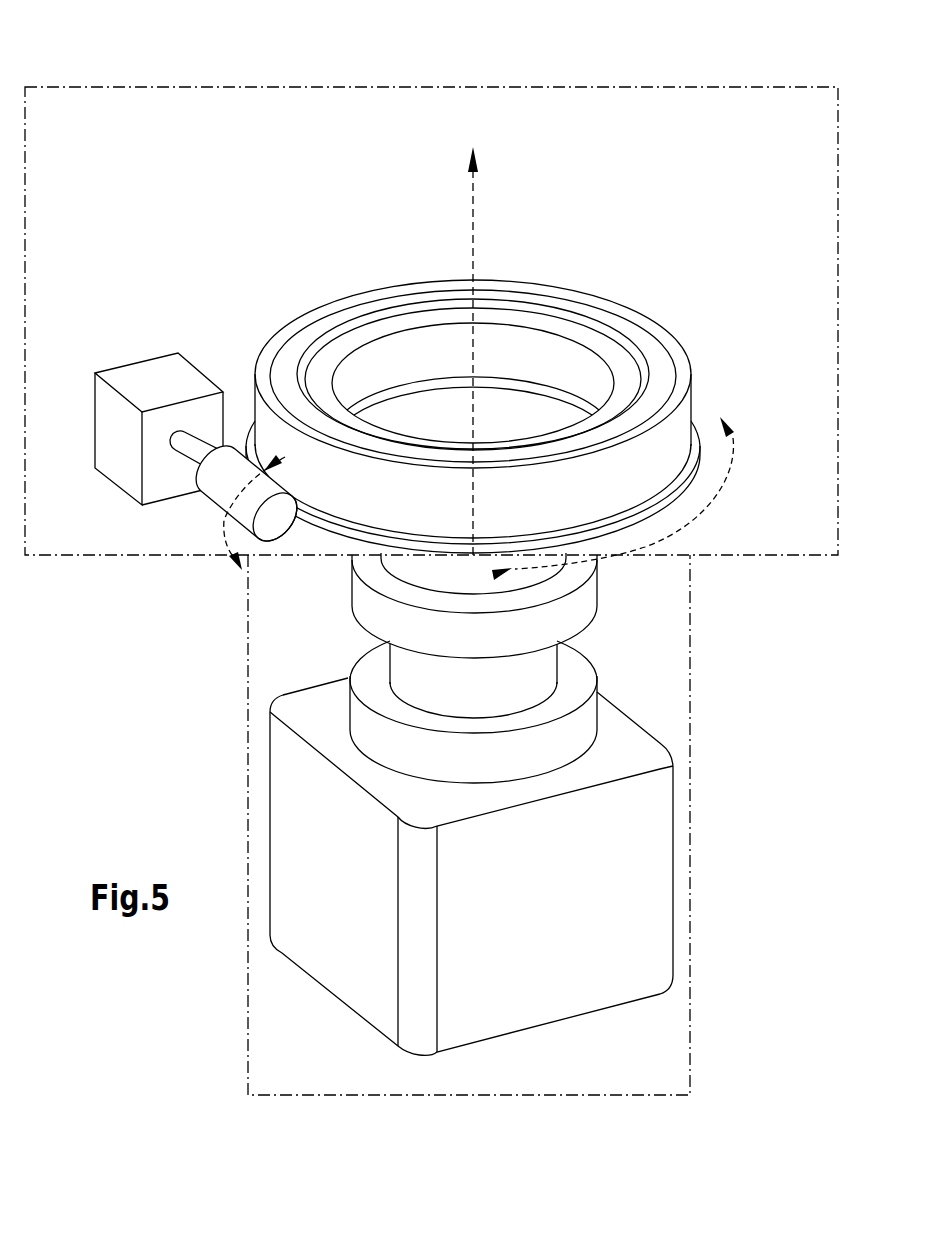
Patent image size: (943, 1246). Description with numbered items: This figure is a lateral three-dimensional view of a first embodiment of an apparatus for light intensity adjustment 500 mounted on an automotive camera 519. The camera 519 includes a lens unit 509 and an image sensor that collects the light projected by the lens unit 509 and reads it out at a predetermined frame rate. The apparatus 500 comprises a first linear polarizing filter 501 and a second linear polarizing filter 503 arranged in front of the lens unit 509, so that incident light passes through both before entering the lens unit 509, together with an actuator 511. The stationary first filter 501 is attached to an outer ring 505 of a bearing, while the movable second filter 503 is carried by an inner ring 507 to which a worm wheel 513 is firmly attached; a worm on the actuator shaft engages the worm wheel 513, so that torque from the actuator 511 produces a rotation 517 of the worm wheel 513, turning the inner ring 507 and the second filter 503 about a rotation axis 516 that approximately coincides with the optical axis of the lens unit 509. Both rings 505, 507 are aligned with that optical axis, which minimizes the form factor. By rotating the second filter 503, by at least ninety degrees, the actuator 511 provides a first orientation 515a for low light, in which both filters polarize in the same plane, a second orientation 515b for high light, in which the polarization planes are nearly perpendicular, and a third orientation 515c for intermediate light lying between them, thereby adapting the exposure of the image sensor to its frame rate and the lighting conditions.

The apparatus for light intensity adjustment 500 is at (181, 68).
The first linear polarizing filter 501 is at (400, 350).
The second linear polarizing filter 503 is at (530, 408).
The outer ring 505 is at (652, 460).
The inner ring 507 is at (655, 510).
The lens unit 509 is at (610, 603).
The actuator 511 is at (115, 428).
The worm wheel 513 is at (223, 485).
The first orientation of linear polarizing filters 515a is at (495, 574).
The second orientation of linear polarizing filters 515b is at (728, 422).
The third orientation of linear polarizing filters 515c is at (670, 530).
The rotation axis 516 is at (482, 220).
The rotation of worm wheel 517 is at (220, 532).
The automotive camera 519 is at (710, 846).